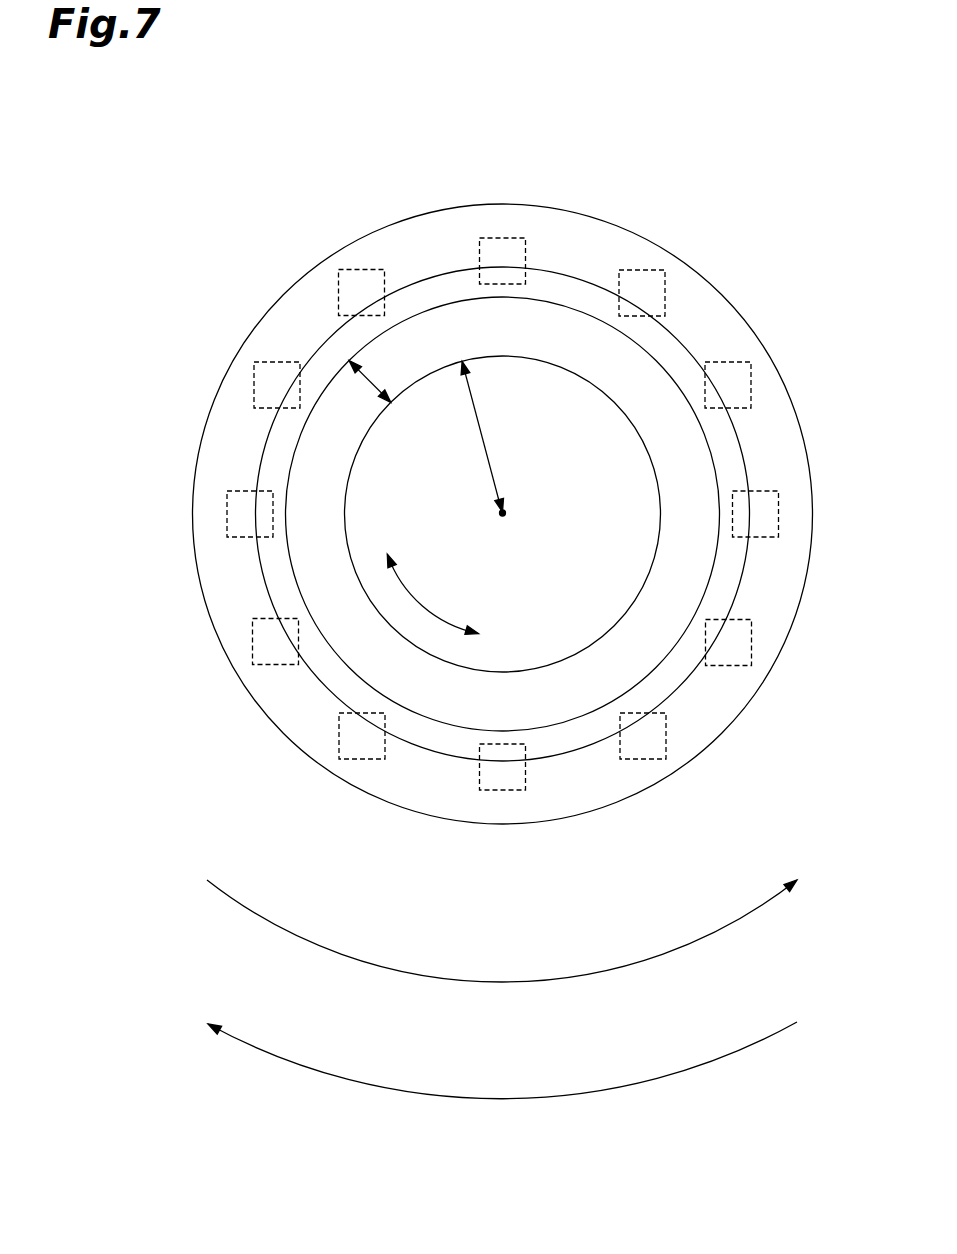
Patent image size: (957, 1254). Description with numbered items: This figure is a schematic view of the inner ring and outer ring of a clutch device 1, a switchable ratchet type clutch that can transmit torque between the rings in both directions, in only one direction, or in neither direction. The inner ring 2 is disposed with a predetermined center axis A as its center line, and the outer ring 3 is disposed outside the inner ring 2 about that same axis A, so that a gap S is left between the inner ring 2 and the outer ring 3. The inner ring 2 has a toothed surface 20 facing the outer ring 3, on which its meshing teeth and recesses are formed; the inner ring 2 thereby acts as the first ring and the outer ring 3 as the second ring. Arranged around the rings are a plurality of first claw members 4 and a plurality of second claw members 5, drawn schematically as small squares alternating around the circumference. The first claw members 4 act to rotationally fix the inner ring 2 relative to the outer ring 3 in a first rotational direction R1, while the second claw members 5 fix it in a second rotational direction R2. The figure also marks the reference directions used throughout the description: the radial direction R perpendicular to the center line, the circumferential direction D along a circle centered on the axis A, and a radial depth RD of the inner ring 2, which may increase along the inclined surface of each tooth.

The clutch device 1 is at (370, 178).
The inner ring 2 is at (672, 460).
The outer ring 3 is at (728, 340).
The first claw member 4 is at (502, 238).
The second claw member 5 is at (338, 297).
The toothed surface 20 is at (712, 573).
The gap S is at (667, 345).
The radial depth RD is at (375, 385).
The radial direction R is at (490, 440).
The axis A is at (504, 513).
The circumferential direction D is at (413, 598).
The first rotational direction R1 is at (465, 983).
The second rotational direction R2 is at (465, 1103).